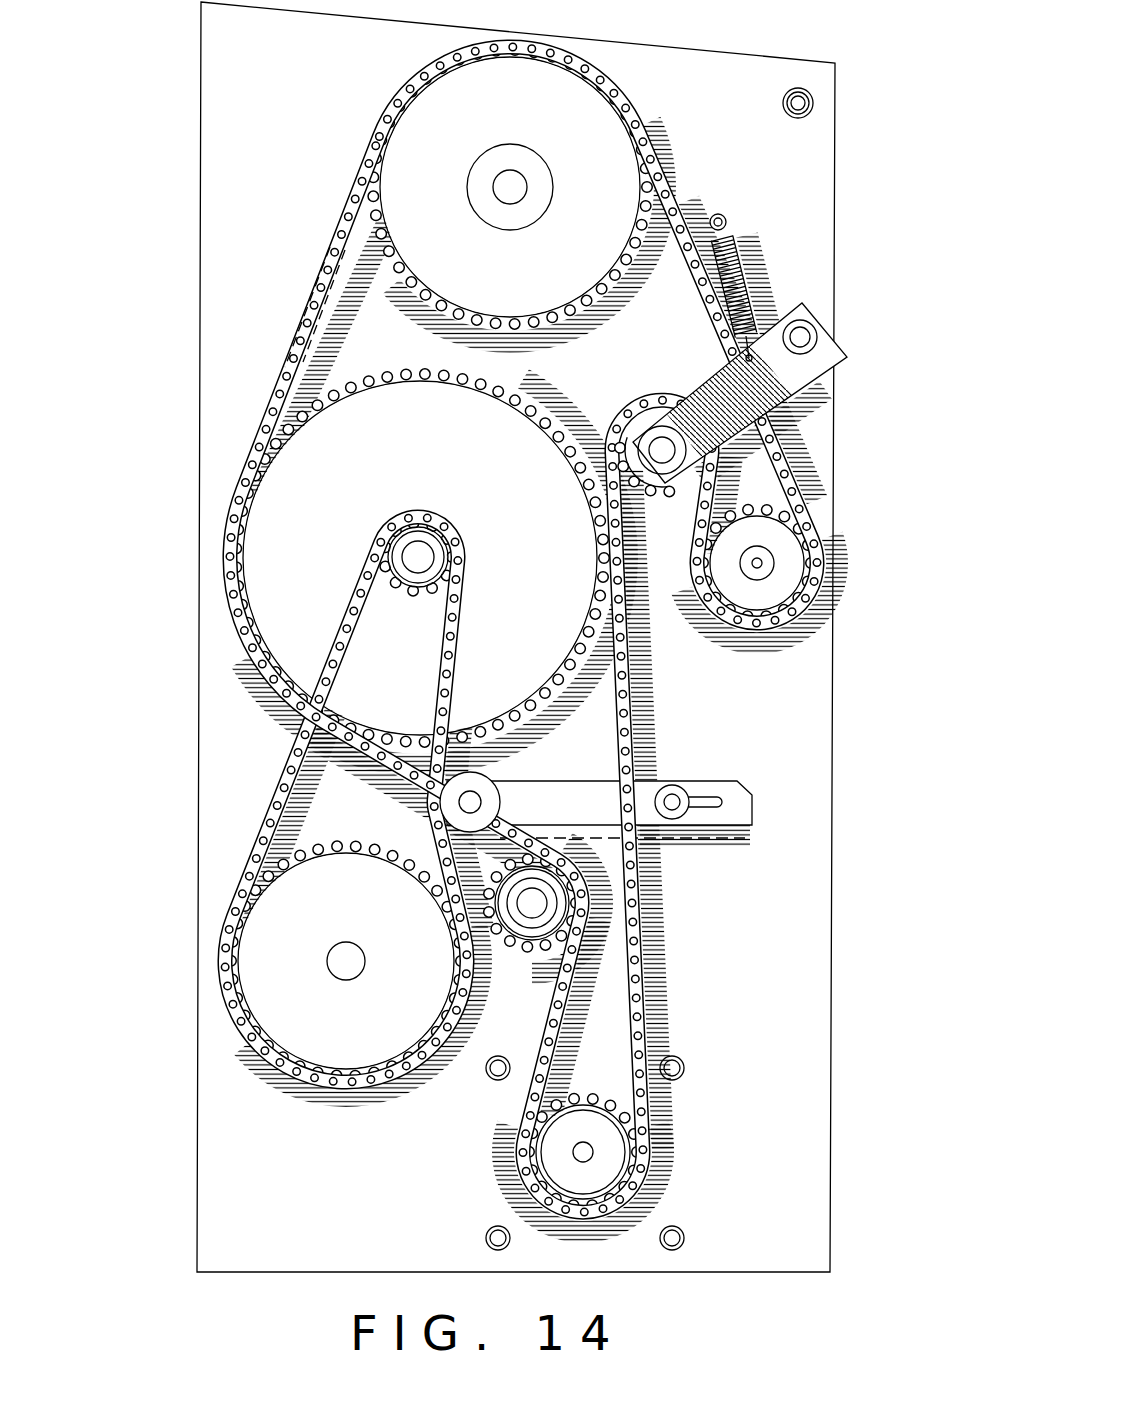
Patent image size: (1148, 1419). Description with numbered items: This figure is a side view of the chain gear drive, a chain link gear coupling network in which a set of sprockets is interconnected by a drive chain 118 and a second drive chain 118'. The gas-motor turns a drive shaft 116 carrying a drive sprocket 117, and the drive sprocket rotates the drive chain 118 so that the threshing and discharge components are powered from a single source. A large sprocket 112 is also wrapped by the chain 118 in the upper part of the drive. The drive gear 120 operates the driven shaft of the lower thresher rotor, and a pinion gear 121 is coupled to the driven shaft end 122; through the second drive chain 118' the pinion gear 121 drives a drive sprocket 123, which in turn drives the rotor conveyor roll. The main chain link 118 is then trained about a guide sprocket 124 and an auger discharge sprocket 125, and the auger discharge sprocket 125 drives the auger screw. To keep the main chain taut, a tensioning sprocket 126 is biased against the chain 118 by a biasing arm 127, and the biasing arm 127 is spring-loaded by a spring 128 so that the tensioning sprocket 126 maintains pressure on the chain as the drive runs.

The drive sprocket 112 is at (440, 93).
The drive shaft 116 is at (760, 563).
The drive sprocket 117 is at (780, 582).
The drive chain 118 is at (523, 629).
The second drive chain 118' is at (297, 799).
The drive gear 120 is at (300, 467).
The pinion gear 121 is at (385, 580).
The driven shaft end 122 is at (418, 557).
The drive sprocket 123 is at (257, 965).
The guide sprocket 124 is at (527, 935).
The auger discharge sprocket 125 is at (610, 1155).
The tensioning sprocket 126 is at (658, 487).
The biasing arm 127 is at (772, 350).
The spring 128 is at (733, 240).